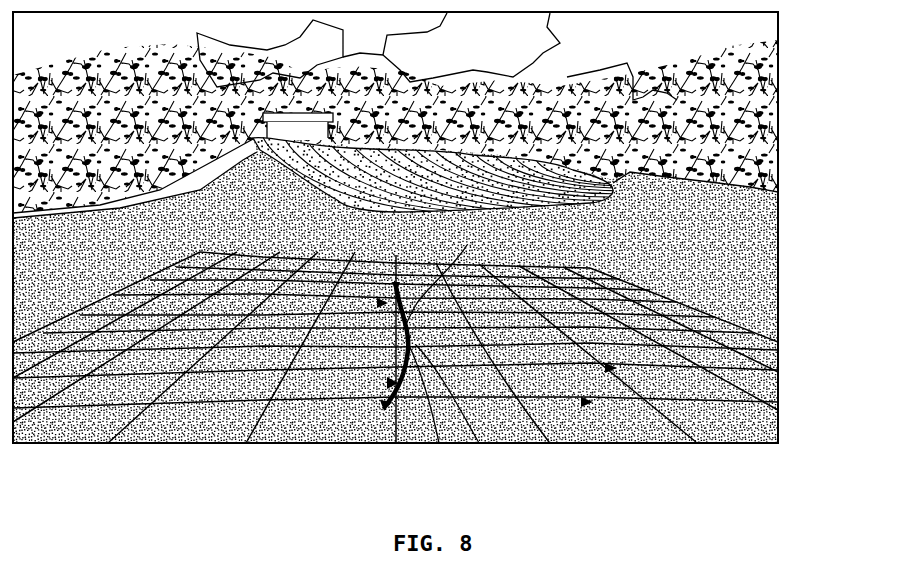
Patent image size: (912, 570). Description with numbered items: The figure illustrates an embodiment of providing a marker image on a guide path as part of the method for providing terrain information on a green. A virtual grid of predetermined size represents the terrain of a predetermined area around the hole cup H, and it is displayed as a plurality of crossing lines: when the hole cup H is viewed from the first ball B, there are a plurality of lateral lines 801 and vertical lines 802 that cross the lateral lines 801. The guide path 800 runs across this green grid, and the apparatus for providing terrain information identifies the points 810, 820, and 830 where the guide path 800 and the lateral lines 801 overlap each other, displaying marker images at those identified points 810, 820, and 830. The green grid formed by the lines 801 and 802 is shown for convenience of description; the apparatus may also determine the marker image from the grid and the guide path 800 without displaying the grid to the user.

The guide path 800 is at (312, 442).
The lateral lines 801 is at (699, 444).
The vertical lines 802 is at (780, 312).
The first ball B is at (374, 443).
The hole cup H is at (348, 258).
The point 830 is at (497, 317).
The point 810 is at (439, 443).
The point 820 is at (479, 443).